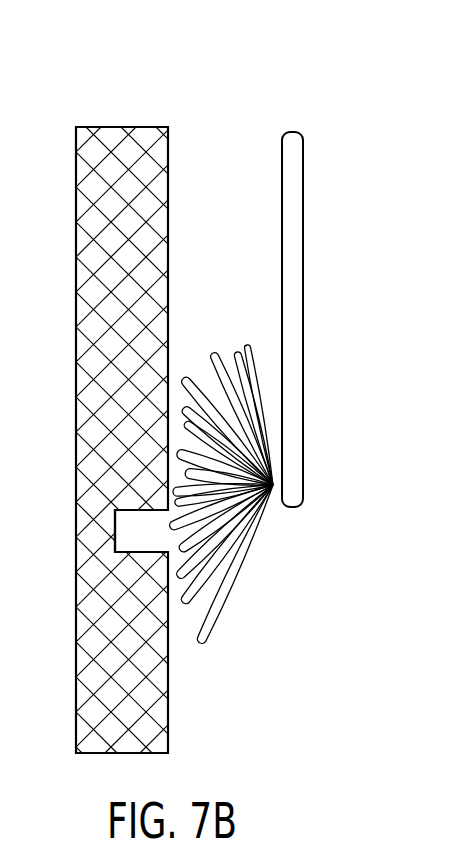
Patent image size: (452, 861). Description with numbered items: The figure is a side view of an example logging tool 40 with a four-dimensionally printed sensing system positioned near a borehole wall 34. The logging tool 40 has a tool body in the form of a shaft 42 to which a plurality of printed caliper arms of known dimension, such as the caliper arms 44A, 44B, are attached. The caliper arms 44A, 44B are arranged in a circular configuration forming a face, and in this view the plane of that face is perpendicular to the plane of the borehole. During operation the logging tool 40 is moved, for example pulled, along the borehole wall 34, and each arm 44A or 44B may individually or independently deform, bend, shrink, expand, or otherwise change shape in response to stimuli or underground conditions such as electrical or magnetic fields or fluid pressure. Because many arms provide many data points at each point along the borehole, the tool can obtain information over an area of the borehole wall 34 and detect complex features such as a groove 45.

The logging tool 40 is at (256, 96).
The shaft 42 is at (305, 173).
The borehole wall 34 is at (117, 410).
The caliper arm 44A is at (245, 490).
The caliper arm 44B is at (232, 390).
The groove 45 is at (141, 537).